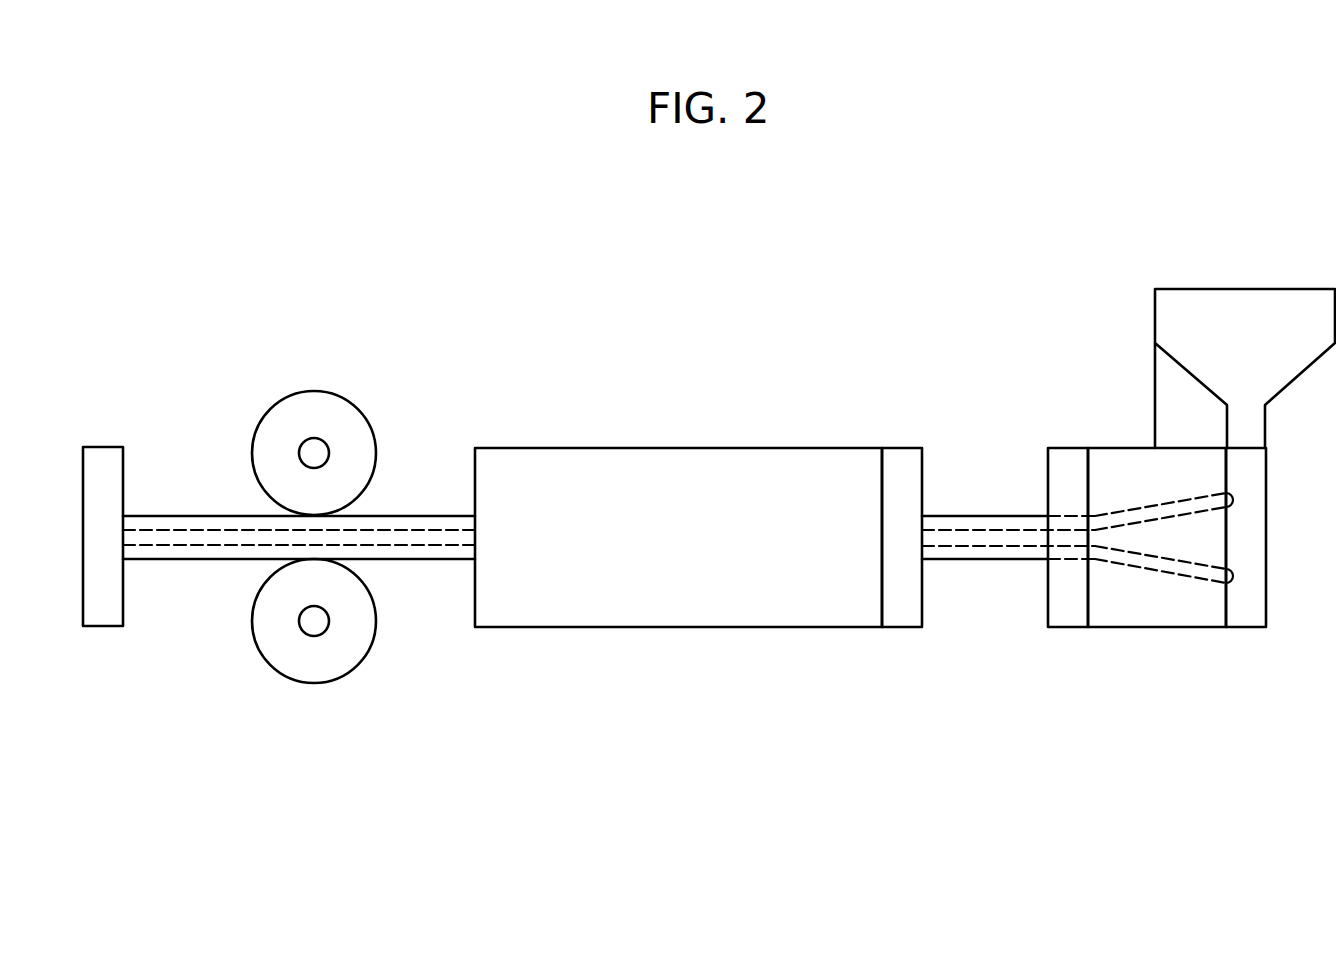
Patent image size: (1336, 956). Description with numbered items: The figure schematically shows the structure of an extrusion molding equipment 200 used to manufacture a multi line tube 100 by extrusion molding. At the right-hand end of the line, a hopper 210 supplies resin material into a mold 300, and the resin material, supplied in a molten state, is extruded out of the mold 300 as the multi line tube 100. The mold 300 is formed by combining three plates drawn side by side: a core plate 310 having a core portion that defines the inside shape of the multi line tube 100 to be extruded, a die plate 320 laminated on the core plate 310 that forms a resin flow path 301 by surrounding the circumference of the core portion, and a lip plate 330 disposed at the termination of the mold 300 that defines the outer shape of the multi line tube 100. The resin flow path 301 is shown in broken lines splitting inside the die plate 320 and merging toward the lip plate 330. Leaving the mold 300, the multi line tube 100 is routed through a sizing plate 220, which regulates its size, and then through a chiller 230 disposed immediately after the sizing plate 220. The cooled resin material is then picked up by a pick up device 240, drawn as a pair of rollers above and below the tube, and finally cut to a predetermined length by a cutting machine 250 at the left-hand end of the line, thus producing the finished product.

The extrusion molding equipment 200 is at (173, 260).
The multi line tube 100 is at (427, 560).
The hopper 210 is at (1273, 300).
The sizing plate 220 is at (893, 448).
The chiller 230 is at (660, 448).
The pick up device 240 is at (394, 404).
The cutting machine 250 is at (103, 447).
The mold 300 is at (1110, 388).
The resin flow path 301 is at (1117, 520).
The core plate 310 is at (1245, 627).
The die plate 320 is at (1162, 627).
The lip plate 330 is at (1072, 627).